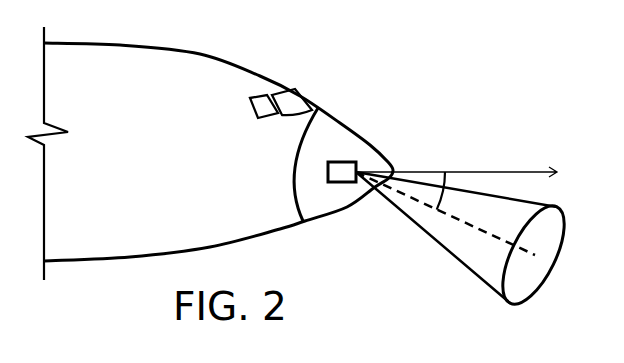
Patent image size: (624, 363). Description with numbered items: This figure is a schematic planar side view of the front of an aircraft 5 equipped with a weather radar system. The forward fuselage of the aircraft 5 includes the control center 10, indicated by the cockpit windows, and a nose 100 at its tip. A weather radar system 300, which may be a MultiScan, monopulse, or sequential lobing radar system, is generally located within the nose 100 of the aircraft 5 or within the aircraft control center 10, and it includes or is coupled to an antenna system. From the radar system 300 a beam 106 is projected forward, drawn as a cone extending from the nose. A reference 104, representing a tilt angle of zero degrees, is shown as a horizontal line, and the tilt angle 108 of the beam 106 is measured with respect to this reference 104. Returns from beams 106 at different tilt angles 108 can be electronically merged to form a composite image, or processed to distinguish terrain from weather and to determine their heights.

The aircraft 5 is at (93, 58).
The control center 10 is at (290, 103).
The nose 100 is at (322, 128).
The weather radar system 300 is at (340, 173).
The reference 104 is at (528, 172).
The beams 106 is at (475, 258).
The tilt angle 108 is at (448, 170).